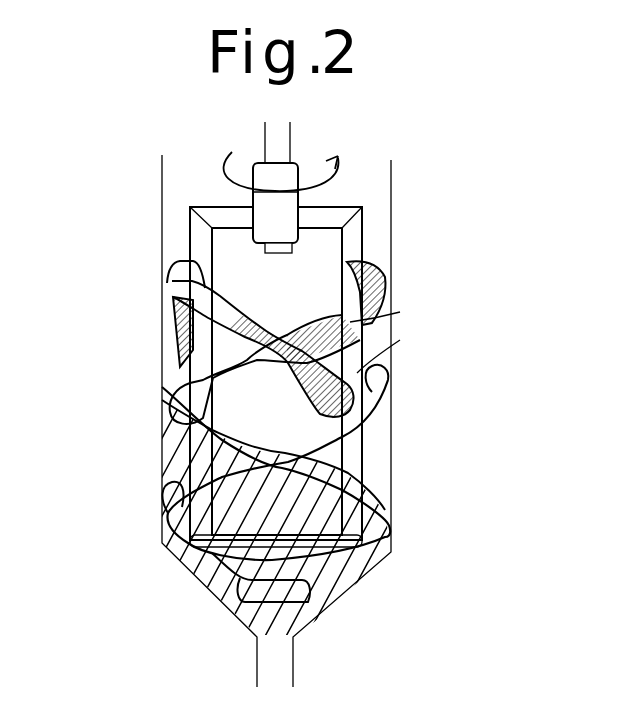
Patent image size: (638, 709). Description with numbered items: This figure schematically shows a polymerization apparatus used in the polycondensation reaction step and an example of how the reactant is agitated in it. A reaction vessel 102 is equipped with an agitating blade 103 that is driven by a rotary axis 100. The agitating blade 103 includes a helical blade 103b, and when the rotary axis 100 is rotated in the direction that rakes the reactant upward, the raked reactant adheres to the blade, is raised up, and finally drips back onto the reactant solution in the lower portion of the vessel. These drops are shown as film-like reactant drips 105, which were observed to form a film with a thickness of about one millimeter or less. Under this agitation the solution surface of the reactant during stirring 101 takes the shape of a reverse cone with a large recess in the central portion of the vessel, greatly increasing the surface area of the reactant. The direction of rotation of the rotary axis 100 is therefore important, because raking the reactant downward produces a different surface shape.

The rotary axis 100 is at (270, 150).
The solution surface of a reactant during stirring 101 is at (300, 470).
The reaction vessel 102 is at (392, 233).
The agitating blade 103 is at (365, 228).
The helical blade 103b is at (178, 283).
The film-like reactant drips 105 is at (362, 368).